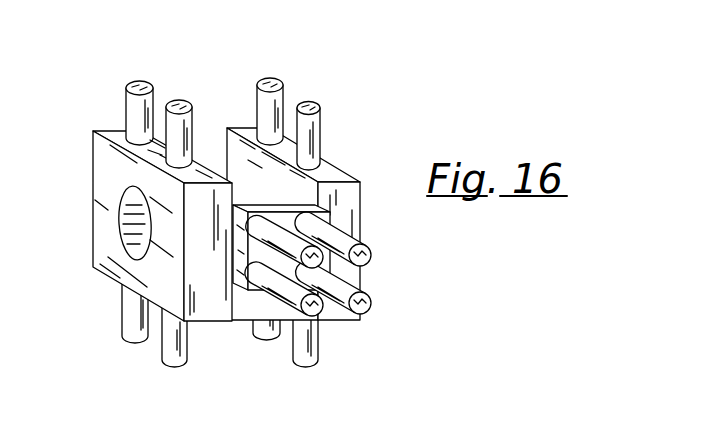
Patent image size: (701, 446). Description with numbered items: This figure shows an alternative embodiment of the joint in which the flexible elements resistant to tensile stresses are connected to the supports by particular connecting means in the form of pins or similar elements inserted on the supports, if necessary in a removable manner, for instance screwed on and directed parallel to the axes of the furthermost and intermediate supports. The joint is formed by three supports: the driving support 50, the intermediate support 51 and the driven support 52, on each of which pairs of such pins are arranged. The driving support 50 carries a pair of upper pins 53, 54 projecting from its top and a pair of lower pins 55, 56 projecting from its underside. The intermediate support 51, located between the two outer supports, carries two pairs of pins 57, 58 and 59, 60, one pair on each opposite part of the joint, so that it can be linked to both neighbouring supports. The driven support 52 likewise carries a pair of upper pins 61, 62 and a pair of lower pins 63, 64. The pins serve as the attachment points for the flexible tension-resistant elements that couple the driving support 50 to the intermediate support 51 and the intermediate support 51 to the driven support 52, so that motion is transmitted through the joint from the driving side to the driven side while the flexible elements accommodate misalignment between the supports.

The driving support 50 is at (102, 220).
The intermediate support 51 is at (238, 287).
The driven support 52 is at (362, 186).
The upper pin 53 is at (131, 80).
The upper pin 54 is at (179, 96).
The lower pin 55 is at (130, 312).
The lower pin 56 is at (168, 348).
The pin 57 is at (355, 278).
The pin 58 is at (372, 257).
The pin 59 is at (327, 311).
The pin 60 is at (372, 307).
The upper pin 61 is at (274, 80).
The upper pin 62 is at (315, 102).
The lower pin 63 is at (263, 343).
The lower pin 64 is at (310, 368).